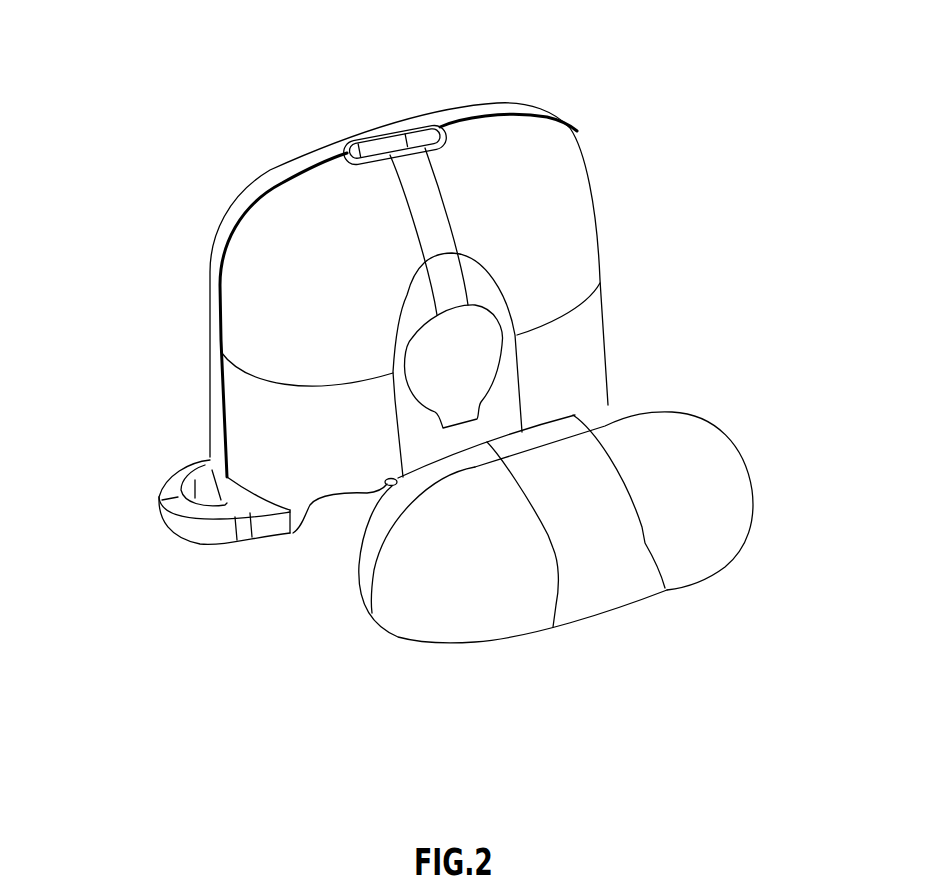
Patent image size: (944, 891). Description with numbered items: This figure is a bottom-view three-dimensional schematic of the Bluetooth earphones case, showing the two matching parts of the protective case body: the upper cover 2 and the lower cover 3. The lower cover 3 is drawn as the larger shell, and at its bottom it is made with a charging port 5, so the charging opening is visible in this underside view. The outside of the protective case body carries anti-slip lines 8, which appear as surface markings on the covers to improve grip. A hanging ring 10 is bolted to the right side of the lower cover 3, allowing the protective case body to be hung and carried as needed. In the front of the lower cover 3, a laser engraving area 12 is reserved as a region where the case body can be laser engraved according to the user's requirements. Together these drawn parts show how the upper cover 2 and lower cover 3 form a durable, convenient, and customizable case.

The upper cover 2 is at (705, 497).
The lower cover 3 is at (558, 237).
The charging port 5 is at (390, 155).
The anti-slip lines 8 is at (553, 548).
The hanging ring 10 is at (183, 525).
The laser engraving area 12 is at (458, 360).